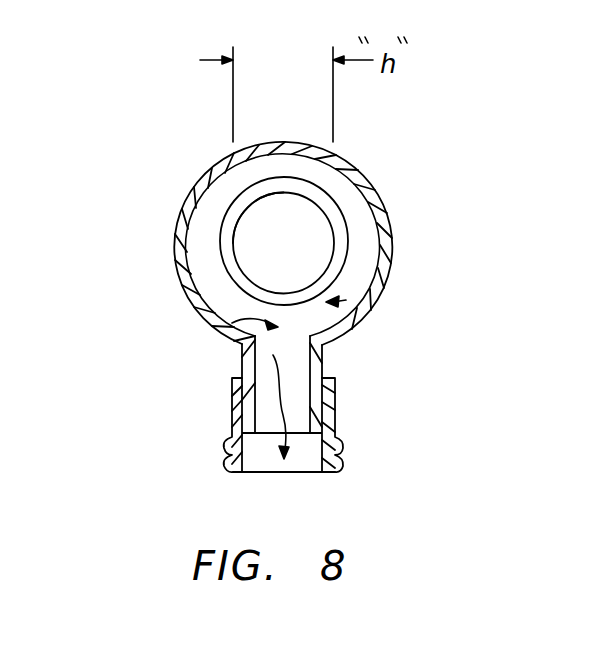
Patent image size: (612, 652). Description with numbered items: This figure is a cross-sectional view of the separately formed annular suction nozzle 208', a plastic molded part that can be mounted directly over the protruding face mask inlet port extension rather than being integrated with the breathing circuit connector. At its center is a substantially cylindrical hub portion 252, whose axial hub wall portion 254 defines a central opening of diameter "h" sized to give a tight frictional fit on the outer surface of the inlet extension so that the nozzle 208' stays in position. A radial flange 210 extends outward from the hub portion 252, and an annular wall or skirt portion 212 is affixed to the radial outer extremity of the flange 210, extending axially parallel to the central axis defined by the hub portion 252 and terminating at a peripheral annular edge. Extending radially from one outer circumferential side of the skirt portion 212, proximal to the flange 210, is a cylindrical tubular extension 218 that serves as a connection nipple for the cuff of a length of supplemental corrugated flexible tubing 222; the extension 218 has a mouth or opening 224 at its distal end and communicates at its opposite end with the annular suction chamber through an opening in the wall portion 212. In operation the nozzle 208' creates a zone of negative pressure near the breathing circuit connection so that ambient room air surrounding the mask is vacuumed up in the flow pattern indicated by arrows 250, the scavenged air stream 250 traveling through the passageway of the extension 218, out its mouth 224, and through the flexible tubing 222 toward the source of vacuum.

The annular suction nozzle 208' is at (376, 241).
The flow pattern arrows 250 is at (221, 218).
The hub portion 252 is at (352, 230).
The radial flange 210 is at (351, 273).
The axial hub wall portion 254 is at (239, 226).
The wall or skirt portion 212 is at (196, 256).
The tubular extension 218 is at (322, 362).
The supplemental flexible tubing 222 is at (343, 450).
The mouth or opening 224 is at (241, 476).